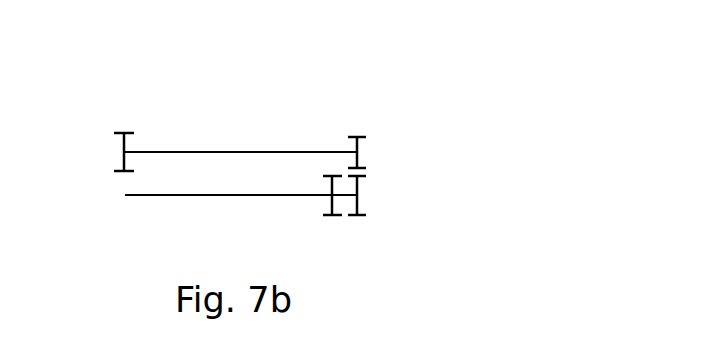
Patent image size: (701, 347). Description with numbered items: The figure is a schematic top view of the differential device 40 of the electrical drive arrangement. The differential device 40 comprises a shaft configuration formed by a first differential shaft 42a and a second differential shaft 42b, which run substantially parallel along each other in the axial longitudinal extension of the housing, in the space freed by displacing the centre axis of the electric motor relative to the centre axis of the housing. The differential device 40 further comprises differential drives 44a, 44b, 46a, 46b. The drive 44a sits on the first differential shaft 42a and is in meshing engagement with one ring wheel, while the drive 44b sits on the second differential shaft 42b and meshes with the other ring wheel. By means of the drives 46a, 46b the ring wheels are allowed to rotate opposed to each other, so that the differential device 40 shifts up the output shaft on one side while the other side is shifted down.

The differential device 40 is at (285, 122).
The first differential shaft 42a is at (195, 196).
The second differential shaft 42b is at (243, 152).
The differential drive 44a is at (332, 206).
The differential drive 44b is at (128, 143).
The differential drive 46a is at (357, 199).
The differential drive 46b is at (358, 160).